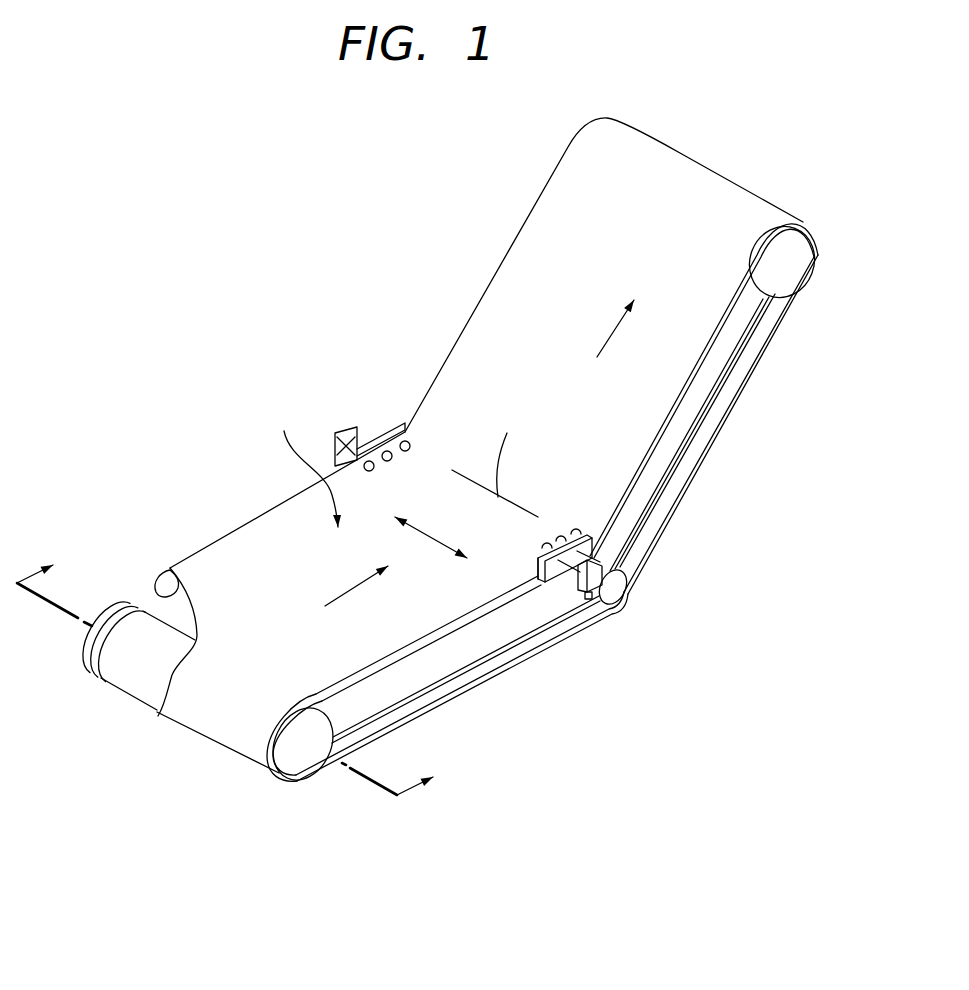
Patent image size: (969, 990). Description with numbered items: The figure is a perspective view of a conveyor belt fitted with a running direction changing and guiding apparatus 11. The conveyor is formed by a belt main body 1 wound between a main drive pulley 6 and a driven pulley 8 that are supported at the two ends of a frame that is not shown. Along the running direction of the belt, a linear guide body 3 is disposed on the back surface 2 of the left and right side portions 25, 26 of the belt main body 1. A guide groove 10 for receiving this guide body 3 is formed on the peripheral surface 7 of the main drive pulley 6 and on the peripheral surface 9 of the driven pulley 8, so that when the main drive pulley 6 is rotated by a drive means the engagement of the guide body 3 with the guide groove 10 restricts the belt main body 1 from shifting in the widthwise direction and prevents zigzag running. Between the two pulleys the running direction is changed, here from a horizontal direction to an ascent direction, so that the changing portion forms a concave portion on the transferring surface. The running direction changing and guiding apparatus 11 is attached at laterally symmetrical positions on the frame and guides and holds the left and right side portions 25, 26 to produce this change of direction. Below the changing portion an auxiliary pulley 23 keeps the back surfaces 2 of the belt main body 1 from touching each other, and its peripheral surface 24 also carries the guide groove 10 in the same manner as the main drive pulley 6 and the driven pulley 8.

The belt main body 1 is at (230, 566).
The back surface 2 is at (165, 575).
The guide body 3 is at (157, 582).
The main drive pulley 6 is at (788, 268).
The peripheral surface 7 is at (776, 300).
The driven pulley 8 is at (293, 763).
The peripheral surface 9 is at (137, 700).
The guide groove 10 is at (83, 660).
The running direction changing and guiding apparatus 11 is at (338, 427).
The auxiliary pulley 23 is at (613, 590).
The peripheral surface 24 is at (628, 572).
The left side portion 25 is at (270, 513).
The right side portion 26 is at (443, 620).